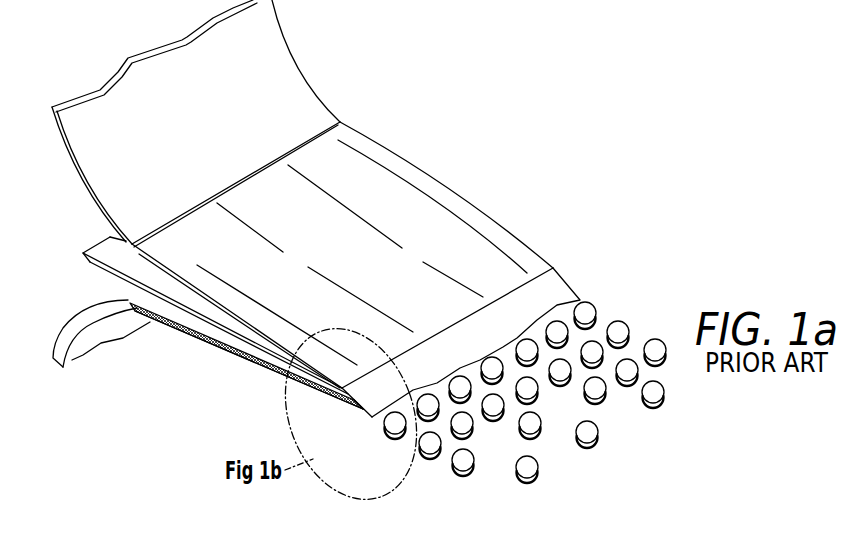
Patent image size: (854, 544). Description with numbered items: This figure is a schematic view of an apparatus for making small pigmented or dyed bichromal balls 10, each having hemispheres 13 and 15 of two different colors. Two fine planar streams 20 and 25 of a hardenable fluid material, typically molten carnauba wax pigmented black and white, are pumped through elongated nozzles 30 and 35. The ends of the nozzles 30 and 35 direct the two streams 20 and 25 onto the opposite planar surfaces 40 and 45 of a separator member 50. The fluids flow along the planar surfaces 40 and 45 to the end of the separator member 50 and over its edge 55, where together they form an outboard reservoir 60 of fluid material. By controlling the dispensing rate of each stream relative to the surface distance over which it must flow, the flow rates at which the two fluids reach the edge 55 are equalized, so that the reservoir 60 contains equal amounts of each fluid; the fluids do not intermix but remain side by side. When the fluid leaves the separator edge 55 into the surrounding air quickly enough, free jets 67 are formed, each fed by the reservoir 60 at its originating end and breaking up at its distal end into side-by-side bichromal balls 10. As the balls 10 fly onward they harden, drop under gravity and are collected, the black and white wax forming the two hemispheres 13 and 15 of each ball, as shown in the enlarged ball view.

The bichromal balls 10 is at (627, 322).
The hemisphere 13 is at (535, 416).
The hemisphere 15 is at (531, 431).
The planar stream 20 is at (315, 155).
The planar stream 25 is at (137, 309).
The elongated nozzle 30 is at (302, 88).
The elongated nozzle 35 is at (80, 322).
The planar surface 40 is at (232, 318).
The planar surface 45 is at (218, 343).
The separator member 50 is at (270, 357).
The edge 55 is at (335, 402).
The outboard reservoir 60 is at (352, 400).
The free jets 67 is at (359, 412).